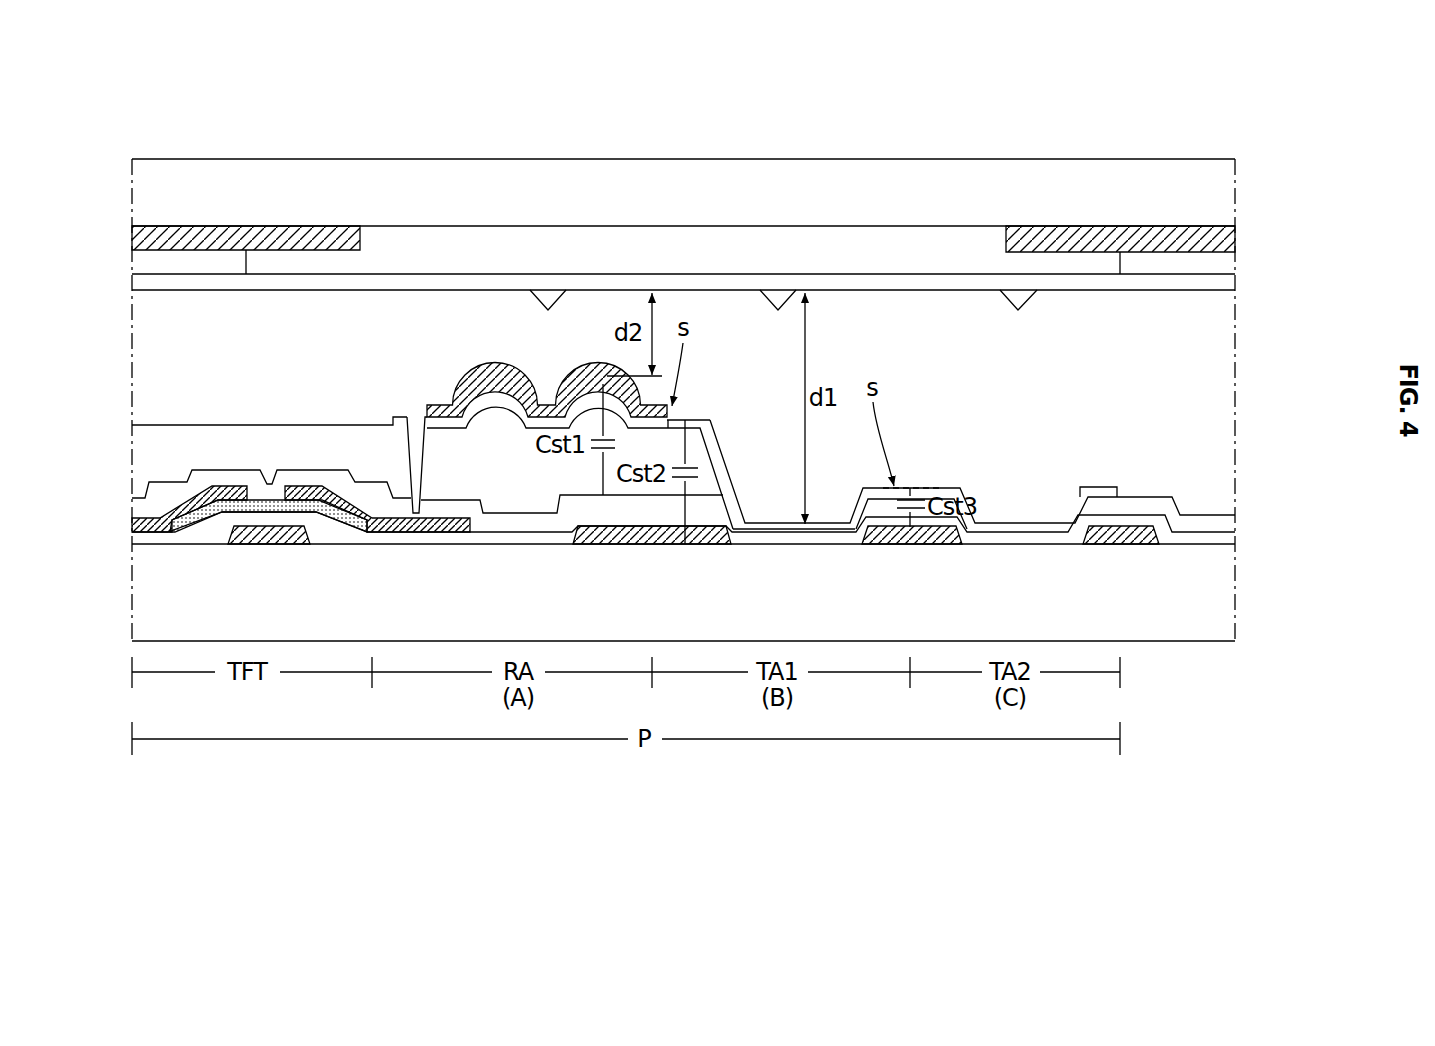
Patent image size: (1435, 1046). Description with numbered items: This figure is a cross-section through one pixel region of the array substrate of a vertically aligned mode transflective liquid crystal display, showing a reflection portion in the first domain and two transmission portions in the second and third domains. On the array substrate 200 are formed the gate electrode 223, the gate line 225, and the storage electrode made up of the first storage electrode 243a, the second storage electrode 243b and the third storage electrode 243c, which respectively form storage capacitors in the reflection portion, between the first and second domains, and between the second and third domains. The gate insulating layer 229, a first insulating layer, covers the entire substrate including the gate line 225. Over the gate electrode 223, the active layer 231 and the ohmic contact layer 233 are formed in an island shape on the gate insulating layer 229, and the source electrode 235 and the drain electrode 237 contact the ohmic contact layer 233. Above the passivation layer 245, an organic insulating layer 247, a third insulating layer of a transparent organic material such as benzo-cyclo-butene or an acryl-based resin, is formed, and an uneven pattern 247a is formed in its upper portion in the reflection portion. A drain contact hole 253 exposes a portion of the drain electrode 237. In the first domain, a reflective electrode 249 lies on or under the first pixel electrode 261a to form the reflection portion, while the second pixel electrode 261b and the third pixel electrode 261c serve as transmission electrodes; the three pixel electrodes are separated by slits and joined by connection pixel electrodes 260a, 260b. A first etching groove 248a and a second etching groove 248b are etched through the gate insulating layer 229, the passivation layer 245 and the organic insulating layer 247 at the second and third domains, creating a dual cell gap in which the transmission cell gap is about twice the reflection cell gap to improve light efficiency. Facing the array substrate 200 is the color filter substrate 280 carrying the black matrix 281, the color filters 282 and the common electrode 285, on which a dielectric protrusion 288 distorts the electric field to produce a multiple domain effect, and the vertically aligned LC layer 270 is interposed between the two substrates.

The color filter substrate 280 is at (652, 203).
The black matrix 281 is at (270, 226).
The color filters 282 is at (465, 248).
The common electrode 285 is at (1237, 281).
The dielectric protrusion 288 is at (773, 290).
The vertically aligned LC layer 270 is at (1222, 350).
The array substrate 200 is at (203, 603).
The gate insulating layer 229 is at (1237, 547).
The gate electrode 223 is at (246, 526).
The first storage electrode 243a is at (600, 545).
The second storage electrode 243b is at (705, 545).
The third storage electrode 243c is at (931, 545).
The gate line 225 is at (1120, 545).
The ohmic contact layer 233 is at (180, 518).
The source electrode 235 is at (204, 494).
The drain electrode 237 is at (305, 490).
The active layer 231 is at (265, 500).
The passivation layer 245 is at (1237, 523).
The drain contact hole 253 is at (411, 414).
The reflective electrode 249 is at (480, 410).
The first pixel electrode 261a is at (490, 452).
The organic insulating layer 247 is at (513, 364).
The uneven pattern 247a is at (598, 392).
The connection pixel electrode 260a is at (685, 418).
The first etching groove 248a is at (771, 496).
The second pixel electrode 261b is at (821, 526).
The connection pixel electrode 260b is at (918, 486).
The second etching groove 248b is at (1022, 476).
The third pixel electrode 261c is at (1100, 487).